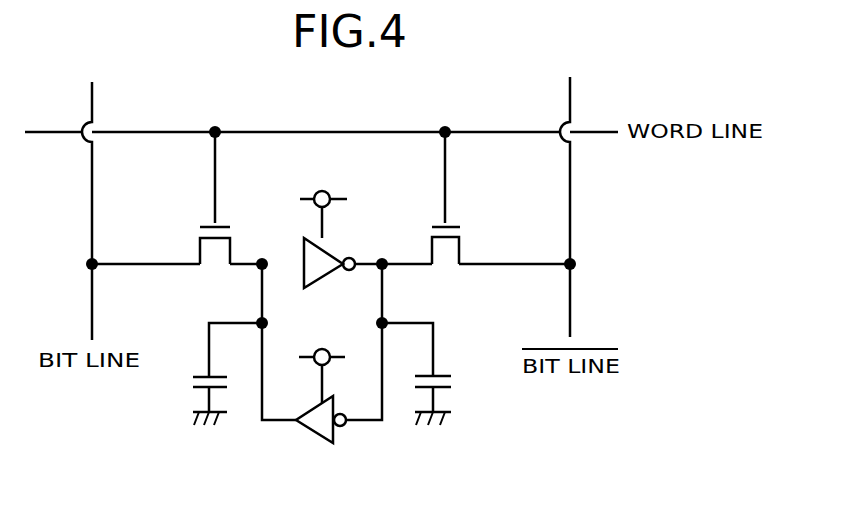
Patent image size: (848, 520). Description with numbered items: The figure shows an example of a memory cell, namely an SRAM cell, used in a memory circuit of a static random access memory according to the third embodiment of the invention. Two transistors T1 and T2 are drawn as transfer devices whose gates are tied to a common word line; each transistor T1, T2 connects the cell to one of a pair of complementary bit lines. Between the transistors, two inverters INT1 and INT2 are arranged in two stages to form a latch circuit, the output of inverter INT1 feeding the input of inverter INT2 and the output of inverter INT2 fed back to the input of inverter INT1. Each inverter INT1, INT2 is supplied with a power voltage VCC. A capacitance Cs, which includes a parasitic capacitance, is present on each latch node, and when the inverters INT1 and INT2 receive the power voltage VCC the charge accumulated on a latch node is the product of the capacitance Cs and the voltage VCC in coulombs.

The transistor T1 is at (253, 220).
The transistor T2 is at (481, 218).
The inverter INT1 is at (356, 242).
The inverter INT2 is at (360, 432).
The power voltage VCC is at (322, 283).
The capacitance Cs is at (321, 374).